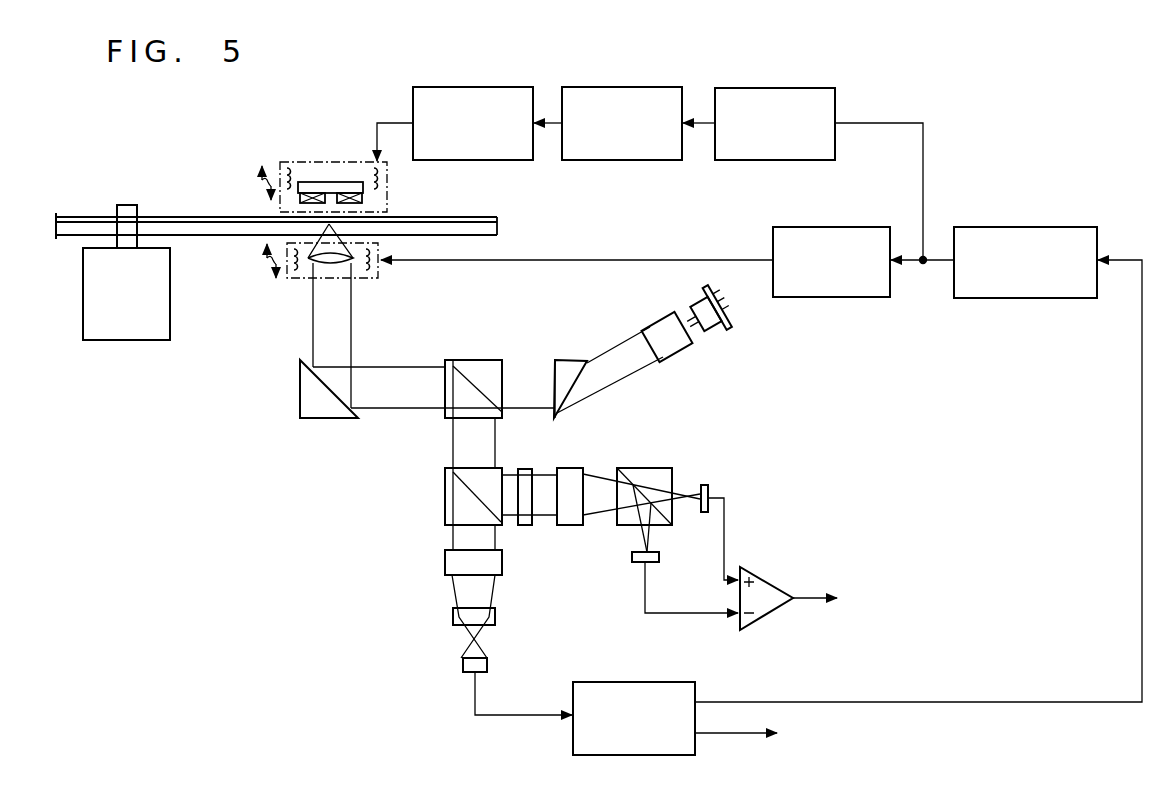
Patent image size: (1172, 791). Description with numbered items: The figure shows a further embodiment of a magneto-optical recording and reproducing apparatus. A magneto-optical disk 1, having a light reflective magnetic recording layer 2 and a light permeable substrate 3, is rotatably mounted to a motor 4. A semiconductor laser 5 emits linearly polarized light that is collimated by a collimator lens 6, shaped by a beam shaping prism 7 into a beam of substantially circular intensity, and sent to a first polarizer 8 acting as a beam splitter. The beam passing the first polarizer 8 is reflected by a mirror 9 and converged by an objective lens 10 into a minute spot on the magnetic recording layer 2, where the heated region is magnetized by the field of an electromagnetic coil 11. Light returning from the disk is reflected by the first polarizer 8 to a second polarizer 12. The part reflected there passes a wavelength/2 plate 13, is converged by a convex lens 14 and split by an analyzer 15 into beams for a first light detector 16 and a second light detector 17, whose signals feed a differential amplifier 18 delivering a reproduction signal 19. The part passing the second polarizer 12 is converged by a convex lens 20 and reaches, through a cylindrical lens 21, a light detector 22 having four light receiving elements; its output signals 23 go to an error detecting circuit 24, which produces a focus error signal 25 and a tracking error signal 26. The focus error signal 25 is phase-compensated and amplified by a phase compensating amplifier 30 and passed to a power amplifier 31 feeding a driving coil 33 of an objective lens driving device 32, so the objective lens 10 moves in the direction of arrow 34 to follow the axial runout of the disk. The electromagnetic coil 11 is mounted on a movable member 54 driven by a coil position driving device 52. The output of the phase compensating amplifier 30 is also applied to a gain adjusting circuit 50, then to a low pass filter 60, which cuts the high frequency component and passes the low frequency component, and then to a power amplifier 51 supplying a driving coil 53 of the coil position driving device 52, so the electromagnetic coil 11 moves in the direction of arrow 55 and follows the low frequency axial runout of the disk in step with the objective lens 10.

The magneto-optical disk 1 is at (183, 240).
The magnetic recording layer 2 is at (165, 217).
The substrate 3 is at (195, 235).
The motor 4 is at (117, 340).
The semiconductor laser 5 is at (700, 300).
The collimator lens 6 is at (650, 326).
The beam shaping prism 7 is at (566, 360).
The first polarizer 8 is at (474, 360).
The mirror 9 is at (328, 420).
The objective lens 10 is at (350, 262).
The electromagnetic coil 11 is at (362, 198).
The second polarizer 12 is at (445, 490).
The wavelength/2 plate 13 is at (526, 469).
The convex lens 14 is at (571, 468).
The analyzer 15 is at (659, 468).
The first light detector 16 is at (706, 485).
The second light detector 17 is at (659, 557).
The differential amplifier 18 is at (767, 567).
The reproduction signal 19 is at (820, 597).
The convex lens 20 is at (445, 562).
The cylindrical lens 21 is at (453, 617).
The light detector for servo signal 22 is at (463, 665).
The output signals 23 is at (536, 715).
The error detecting circuit 24 is at (626, 682).
The focus error signal 25 is at (747, 702).
The tracking error signal 26 is at (750, 734).
The phase compensating amplifier 30 is at (1045, 227).
The power amplifier 31 is at (852, 227).
The objective lens driving device 32 is at (305, 280).
The driving coil 33 is at (296, 272).
The arrow 34 is at (263, 259).
The gain adjusting circuit 50 is at (800, 88).
The power amplifier 51 is at (495, 87).
The coil position driving device 52 is at (357, 160).
The driving coil 53 is at (290, 165).
The movable member 54 is at (318, 182).
The arrow 55 is at (258, 182).
The low pass filter 60 is at (644, 87).